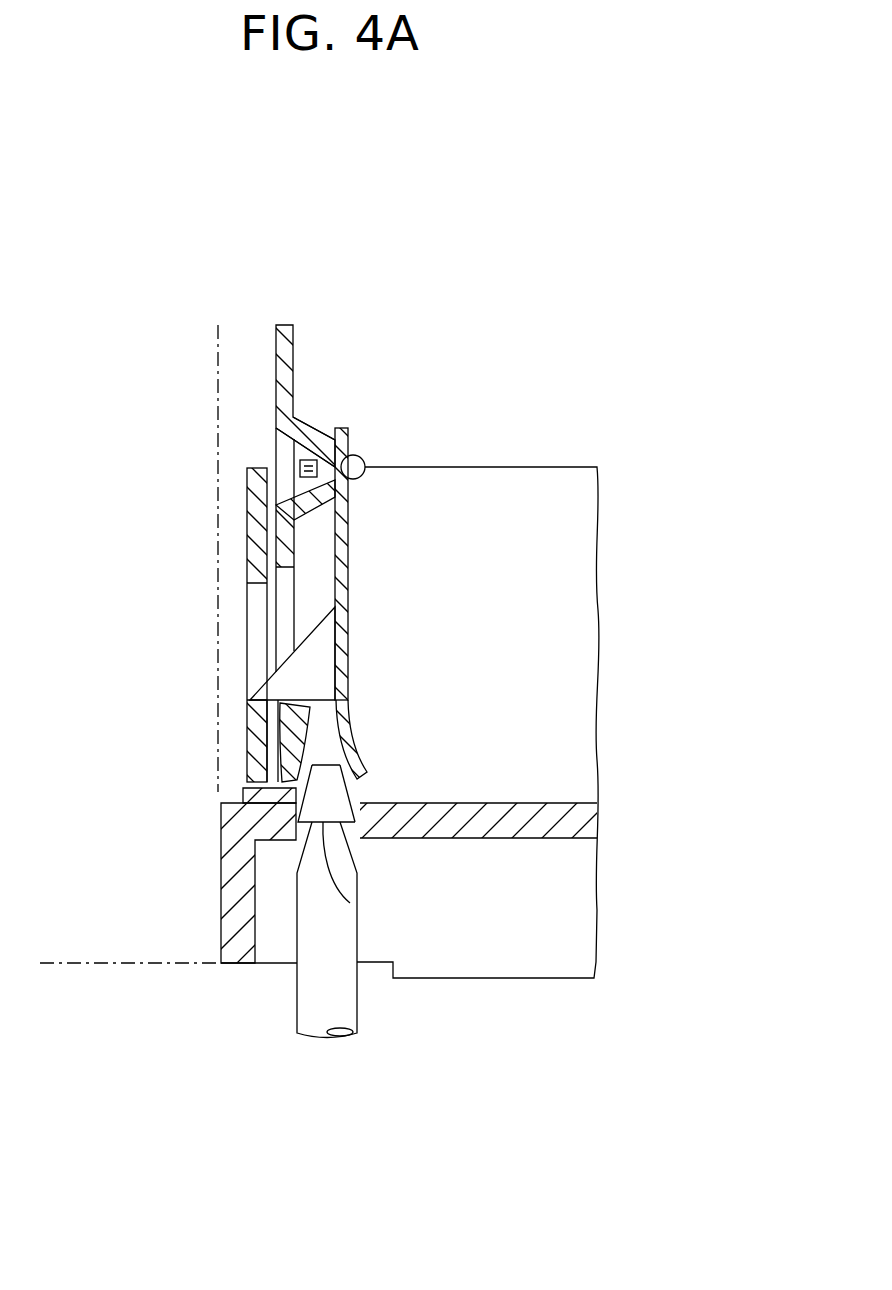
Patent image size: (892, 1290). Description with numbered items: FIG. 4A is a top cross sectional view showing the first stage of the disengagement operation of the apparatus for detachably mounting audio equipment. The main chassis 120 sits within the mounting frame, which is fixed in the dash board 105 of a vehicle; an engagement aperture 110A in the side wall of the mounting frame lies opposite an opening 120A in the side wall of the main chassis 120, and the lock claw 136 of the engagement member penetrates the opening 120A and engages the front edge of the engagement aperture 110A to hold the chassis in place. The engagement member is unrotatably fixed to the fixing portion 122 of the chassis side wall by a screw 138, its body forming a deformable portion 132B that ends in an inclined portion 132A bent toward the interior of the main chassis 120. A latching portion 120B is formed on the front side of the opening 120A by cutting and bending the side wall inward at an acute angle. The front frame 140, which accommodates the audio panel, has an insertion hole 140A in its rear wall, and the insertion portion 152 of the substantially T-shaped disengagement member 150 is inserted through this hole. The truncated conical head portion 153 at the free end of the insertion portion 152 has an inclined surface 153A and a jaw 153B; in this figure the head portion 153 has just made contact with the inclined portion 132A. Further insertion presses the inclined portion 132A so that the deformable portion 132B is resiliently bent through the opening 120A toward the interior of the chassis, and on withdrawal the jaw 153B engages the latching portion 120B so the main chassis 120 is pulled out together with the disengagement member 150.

The dash board 105 is at (100, 963).
The engagement aperture 110A is at (258, 647).
The main chassis 120 is at (308, 348).
The opening 120A is at (290, 600).
The latching portion 120B is at (290, 726).
The fixing portion 122 is at (313, 437).
The inclined portion 132A is at (360, 748).
The deformable portion 132B is at (343, 681).
The lock claw 136 is at (325, 640).
The screw 138 is at (359, 480).
The front frame 140 is at (489, 1005).
The insertion hole 140A is at (295, 815).
The disengagement member 150 is at (334, 965).
The insertion portion 152 is at (297, 916).
The head portion 153 is at (437, 854).
The inclined surface 153A is at (350, 782).
The jaw 153B is at (350, 903).